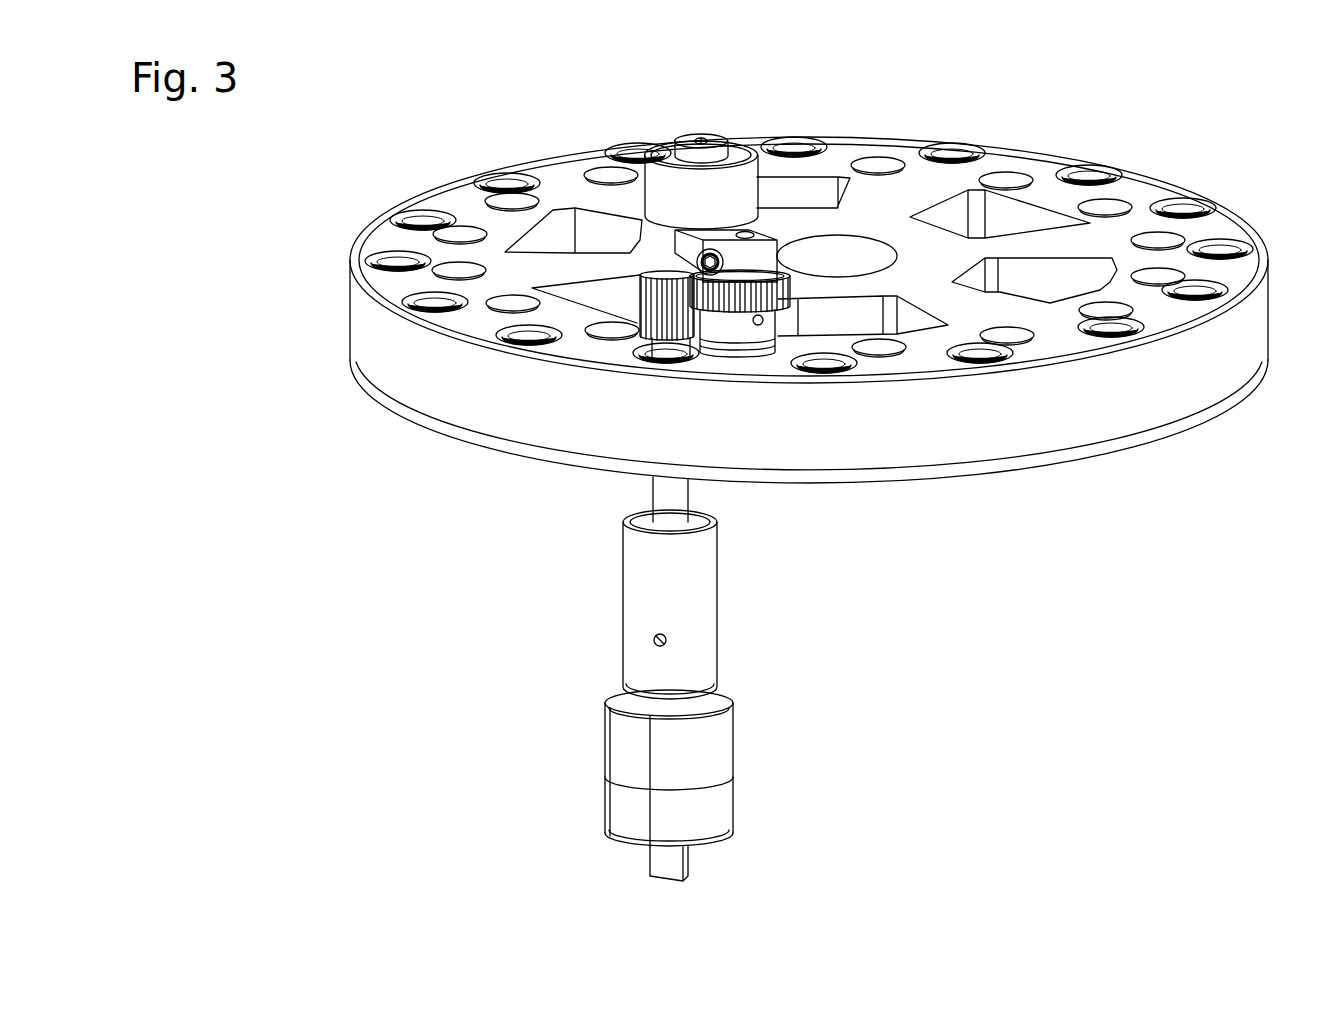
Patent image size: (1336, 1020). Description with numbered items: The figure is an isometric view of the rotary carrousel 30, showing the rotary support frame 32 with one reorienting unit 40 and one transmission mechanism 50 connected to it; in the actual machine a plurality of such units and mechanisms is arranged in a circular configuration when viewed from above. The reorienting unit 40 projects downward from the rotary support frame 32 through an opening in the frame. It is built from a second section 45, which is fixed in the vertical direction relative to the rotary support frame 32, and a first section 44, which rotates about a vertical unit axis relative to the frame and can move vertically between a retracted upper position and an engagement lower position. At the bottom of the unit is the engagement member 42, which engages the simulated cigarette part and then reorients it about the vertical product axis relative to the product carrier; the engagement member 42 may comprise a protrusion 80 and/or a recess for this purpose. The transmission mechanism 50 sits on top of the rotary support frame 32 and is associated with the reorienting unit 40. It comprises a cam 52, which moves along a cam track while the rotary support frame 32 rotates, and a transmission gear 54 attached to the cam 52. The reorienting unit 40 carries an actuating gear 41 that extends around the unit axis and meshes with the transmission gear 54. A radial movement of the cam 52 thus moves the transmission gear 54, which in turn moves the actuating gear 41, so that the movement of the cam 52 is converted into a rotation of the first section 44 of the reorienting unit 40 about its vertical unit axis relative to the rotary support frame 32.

The rotary carrousel 30 is at (289, 391).
The rotary support frame 32 is at (960, 436).
The reorienting unit 40 is at (568, 604).
The actuating gear 41 is at (640, 290).
The engagement member 42 is at (690, 815).
The first section 44 is at (643, 662).
The second section 45 is at (663, 500).
The transmission mechanism 50 is at (793, 184).
The cam 52 is at (707, 200).
The transmission gear 54 is at (790, 273).
The protrusion 80 is at (672, 864).